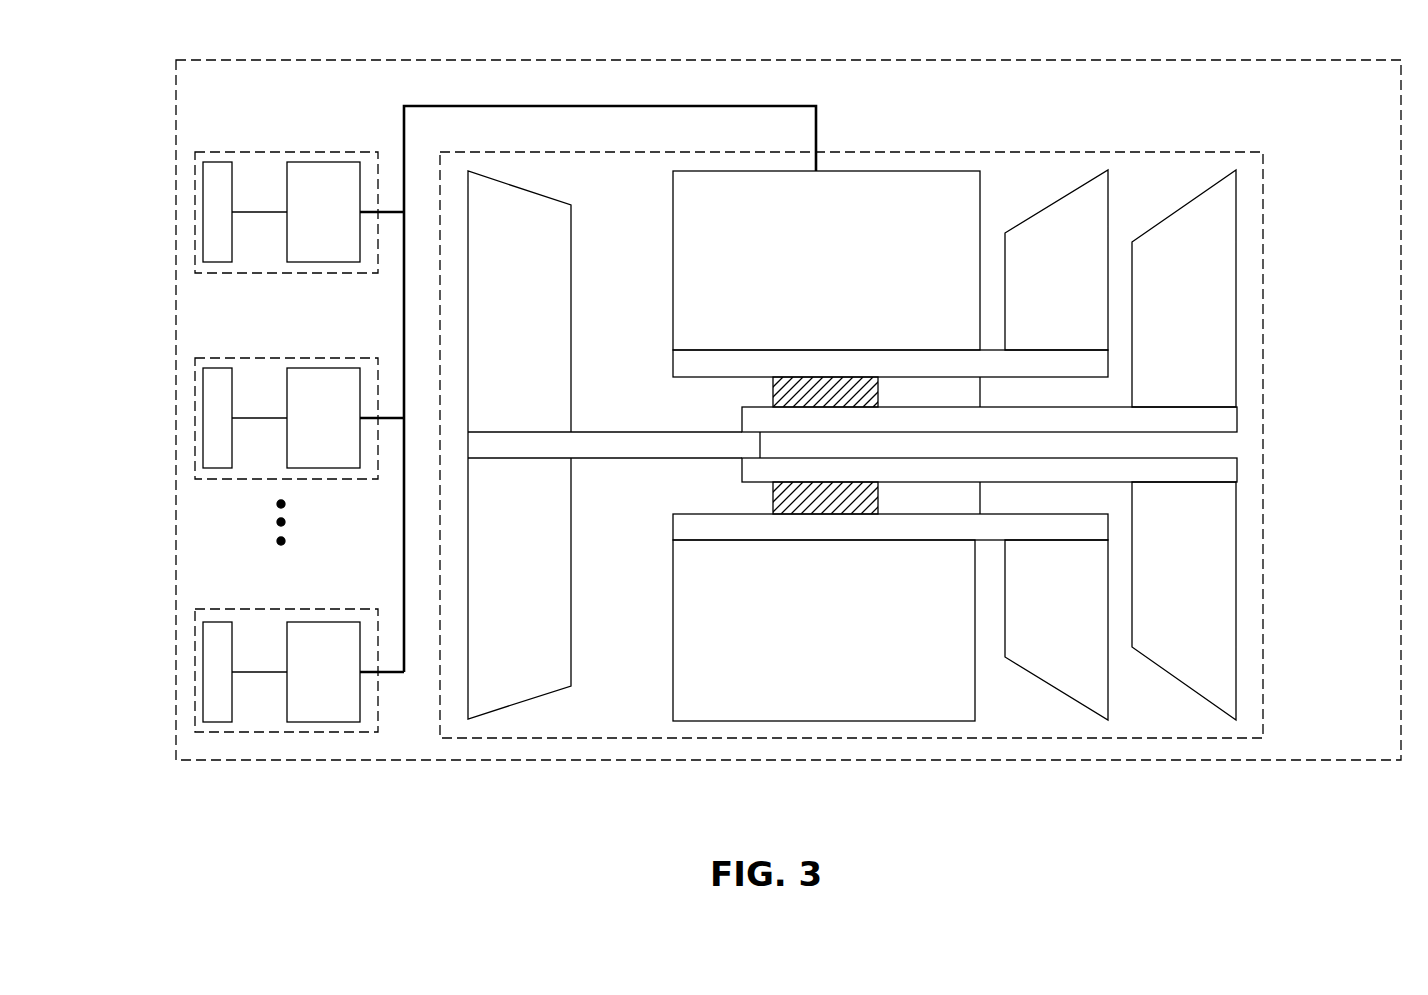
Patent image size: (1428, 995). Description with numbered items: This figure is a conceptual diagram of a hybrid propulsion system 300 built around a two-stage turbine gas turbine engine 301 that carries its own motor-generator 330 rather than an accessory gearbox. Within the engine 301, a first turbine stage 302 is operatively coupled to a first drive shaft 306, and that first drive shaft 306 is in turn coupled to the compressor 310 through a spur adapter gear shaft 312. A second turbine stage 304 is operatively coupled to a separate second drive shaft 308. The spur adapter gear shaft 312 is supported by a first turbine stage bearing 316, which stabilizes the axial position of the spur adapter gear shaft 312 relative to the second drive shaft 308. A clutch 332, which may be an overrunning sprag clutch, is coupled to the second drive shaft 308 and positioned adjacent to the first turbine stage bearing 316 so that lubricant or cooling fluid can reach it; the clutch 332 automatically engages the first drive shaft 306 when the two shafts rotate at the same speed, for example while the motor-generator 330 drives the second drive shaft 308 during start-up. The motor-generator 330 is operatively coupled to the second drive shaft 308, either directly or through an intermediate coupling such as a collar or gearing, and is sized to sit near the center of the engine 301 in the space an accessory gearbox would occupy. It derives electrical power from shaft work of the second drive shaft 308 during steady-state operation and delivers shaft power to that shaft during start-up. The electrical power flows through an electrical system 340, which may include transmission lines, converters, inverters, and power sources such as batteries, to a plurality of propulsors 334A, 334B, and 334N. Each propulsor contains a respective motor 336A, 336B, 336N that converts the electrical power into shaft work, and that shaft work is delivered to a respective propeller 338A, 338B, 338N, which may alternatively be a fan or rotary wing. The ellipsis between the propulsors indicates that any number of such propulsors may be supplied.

The hybrid propulsion system 300 is at (1276, 60).
The two-stage turbine gas turbine engine 301 is at (1237, 152).
The electrical system 340 is at (816, 140).
The propulsor 334A is at (238, 192).
The propulsor 334B is at (238, 400).
The propulsor 334N is at (238, 650).
The propeller 338A is at (210, 210).
The propeller 338B is at (210, 418).
The propeller 338N is at (210, 672).
The motor 336A is at (352, 219).
The motor 336B is at (352, 425).
The motor 336N is at (352, 679).
The compressor 310 is at (540, 318).
The spur adapter gear shaft 312 is at (636, 455).
The motor-generator 330 is at (846, 270).
The second drive shaft 308 is at (890, 363).
The clutch 332 is at (847, 402).
The first drive shaft 306 is at (1010, 430).
The first turbine stage bearing 316 is at (948, 507).
The second turbine stage 304 is at (1090, 290).
The first turbine stage 302 is at (1210, 316).